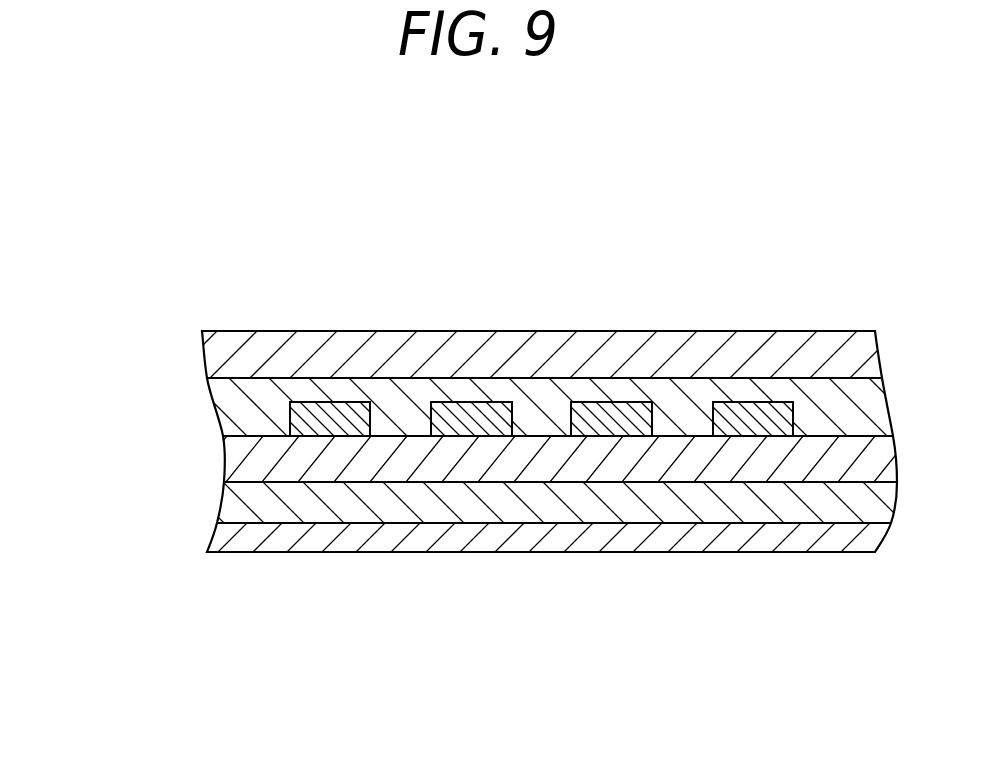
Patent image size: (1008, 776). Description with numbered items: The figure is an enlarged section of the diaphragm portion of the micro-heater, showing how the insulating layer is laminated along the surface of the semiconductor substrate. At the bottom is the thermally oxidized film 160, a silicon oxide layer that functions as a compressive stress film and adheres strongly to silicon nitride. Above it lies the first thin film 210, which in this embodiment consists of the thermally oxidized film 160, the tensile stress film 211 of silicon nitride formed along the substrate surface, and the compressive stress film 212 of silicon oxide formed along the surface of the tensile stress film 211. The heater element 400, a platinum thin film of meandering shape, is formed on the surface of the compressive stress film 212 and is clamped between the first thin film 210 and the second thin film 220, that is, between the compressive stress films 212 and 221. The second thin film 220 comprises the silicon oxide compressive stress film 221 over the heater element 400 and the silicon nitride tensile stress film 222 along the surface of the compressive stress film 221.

The second thin film 220 is at (492, 328).
The tensile stress film 222 is at (416, 330).
The compressive stress film 221 is at (528, 388).
The heater element 400 is at (767, 387).
The first thin film 210 is at (500, 535).
The compressive stress film 212 is at (373, 453).
The tensile stress film 211 is at (513, 497).
The thermally oxidized film 160 is at (544, 578).